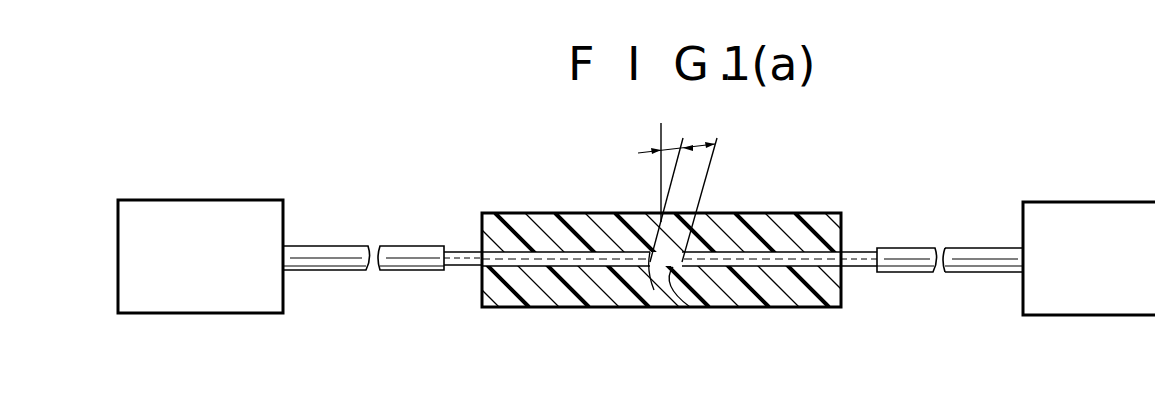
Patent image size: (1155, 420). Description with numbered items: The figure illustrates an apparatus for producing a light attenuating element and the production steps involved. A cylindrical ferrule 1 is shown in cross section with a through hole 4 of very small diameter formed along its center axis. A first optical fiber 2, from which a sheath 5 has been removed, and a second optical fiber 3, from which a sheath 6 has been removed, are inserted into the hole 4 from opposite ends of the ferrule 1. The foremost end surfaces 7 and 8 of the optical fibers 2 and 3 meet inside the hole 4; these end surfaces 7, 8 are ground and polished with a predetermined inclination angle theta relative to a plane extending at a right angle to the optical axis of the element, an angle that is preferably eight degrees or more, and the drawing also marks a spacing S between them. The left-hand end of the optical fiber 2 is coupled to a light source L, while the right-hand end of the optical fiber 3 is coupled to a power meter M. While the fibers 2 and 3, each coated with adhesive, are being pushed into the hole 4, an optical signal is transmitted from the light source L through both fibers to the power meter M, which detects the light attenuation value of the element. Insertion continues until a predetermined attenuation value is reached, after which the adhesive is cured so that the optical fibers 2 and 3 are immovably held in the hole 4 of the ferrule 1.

The cylindrical ferrule 1 is at (813, 215).
The first optical fiber 2 is at (462, 252).
The second optical fiber 3 is at (866, 257).
The through hole 4 is at (538, 258).
The sheath 5 is at (383, 268).
The sheath 6 is at (978, 263).
The foremost end surface 7 is at (650, 258).
The foremost end surface 8 is at (690, 307).
The light source L is at (236, 208).
The power meter M is at (1097, 214).